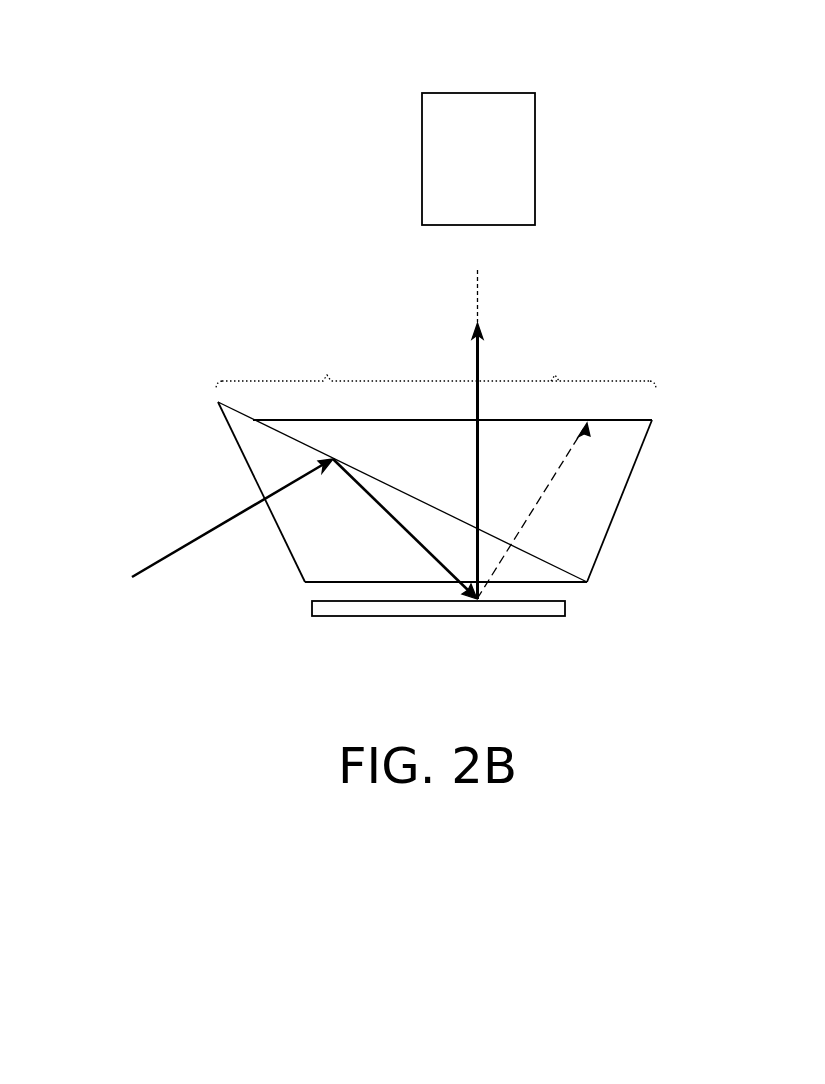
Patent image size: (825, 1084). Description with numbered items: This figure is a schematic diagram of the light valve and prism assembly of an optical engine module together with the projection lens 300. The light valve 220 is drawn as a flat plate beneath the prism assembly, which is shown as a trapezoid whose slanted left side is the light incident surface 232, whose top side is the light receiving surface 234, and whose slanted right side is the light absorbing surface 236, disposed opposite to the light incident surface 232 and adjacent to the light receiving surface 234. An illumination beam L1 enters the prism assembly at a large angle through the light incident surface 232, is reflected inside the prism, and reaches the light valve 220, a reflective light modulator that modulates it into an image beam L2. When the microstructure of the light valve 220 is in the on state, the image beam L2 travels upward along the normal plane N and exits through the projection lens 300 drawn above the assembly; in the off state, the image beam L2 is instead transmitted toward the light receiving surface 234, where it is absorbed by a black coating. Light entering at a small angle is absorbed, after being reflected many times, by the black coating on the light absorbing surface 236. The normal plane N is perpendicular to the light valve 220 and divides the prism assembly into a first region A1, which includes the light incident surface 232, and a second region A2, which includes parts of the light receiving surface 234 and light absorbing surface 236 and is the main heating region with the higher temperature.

The projection lens 300 is at (537, 167).
The light valve 220 is at (523, 617).
The light incident surface 232 is at (286, 559).
The light receiving surface 234 is at (642, 419).
The light absorbing surface 236 is at (618, 488).
The illumination beam L1 is at (286, 529).
The image beam L2 is at (471, 366).
The normal plane N is at (477, 282).
The first region A1 is at (436, 366).
The second region A2 is at (555, 362).